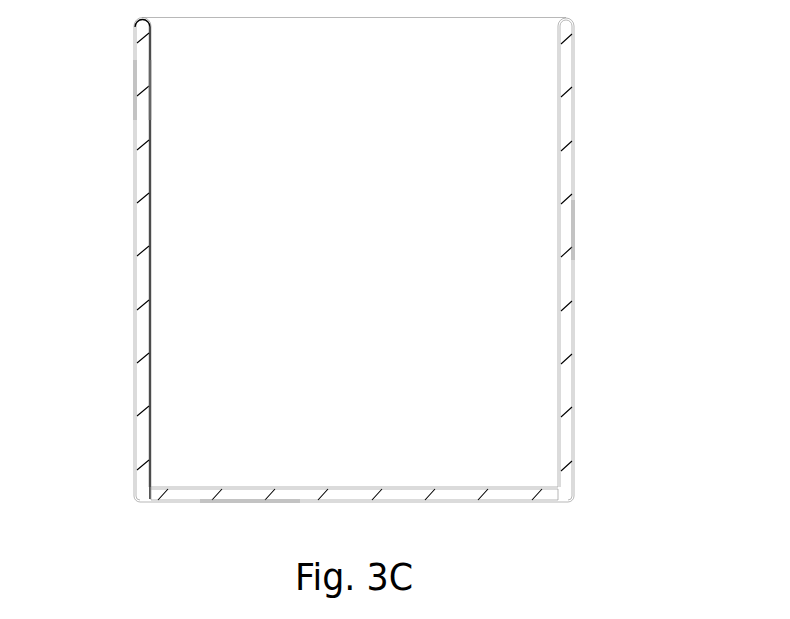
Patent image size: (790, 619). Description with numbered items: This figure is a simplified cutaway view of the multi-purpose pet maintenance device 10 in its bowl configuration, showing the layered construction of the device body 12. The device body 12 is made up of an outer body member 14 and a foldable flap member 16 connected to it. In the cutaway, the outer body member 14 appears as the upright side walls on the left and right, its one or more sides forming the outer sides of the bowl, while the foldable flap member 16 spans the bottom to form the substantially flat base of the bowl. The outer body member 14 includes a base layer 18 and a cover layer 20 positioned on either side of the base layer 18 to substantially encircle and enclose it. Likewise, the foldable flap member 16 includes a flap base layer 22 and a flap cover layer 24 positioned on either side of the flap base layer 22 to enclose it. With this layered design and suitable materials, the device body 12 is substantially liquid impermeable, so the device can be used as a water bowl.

The multi-purpose pet maintenance device 10 is at (645, 171).
The device body 12 is at (593, 304).
The outer body member 14 is at (567, 227).
The foldable flap member 16 is at (503, 493).
The base layer 18 is at (142, 167).
The cover layer 20 is at (150, 103).
The flap base layer 22 is at (240, 496).
The flap cover layer 24 is at (182, 503).